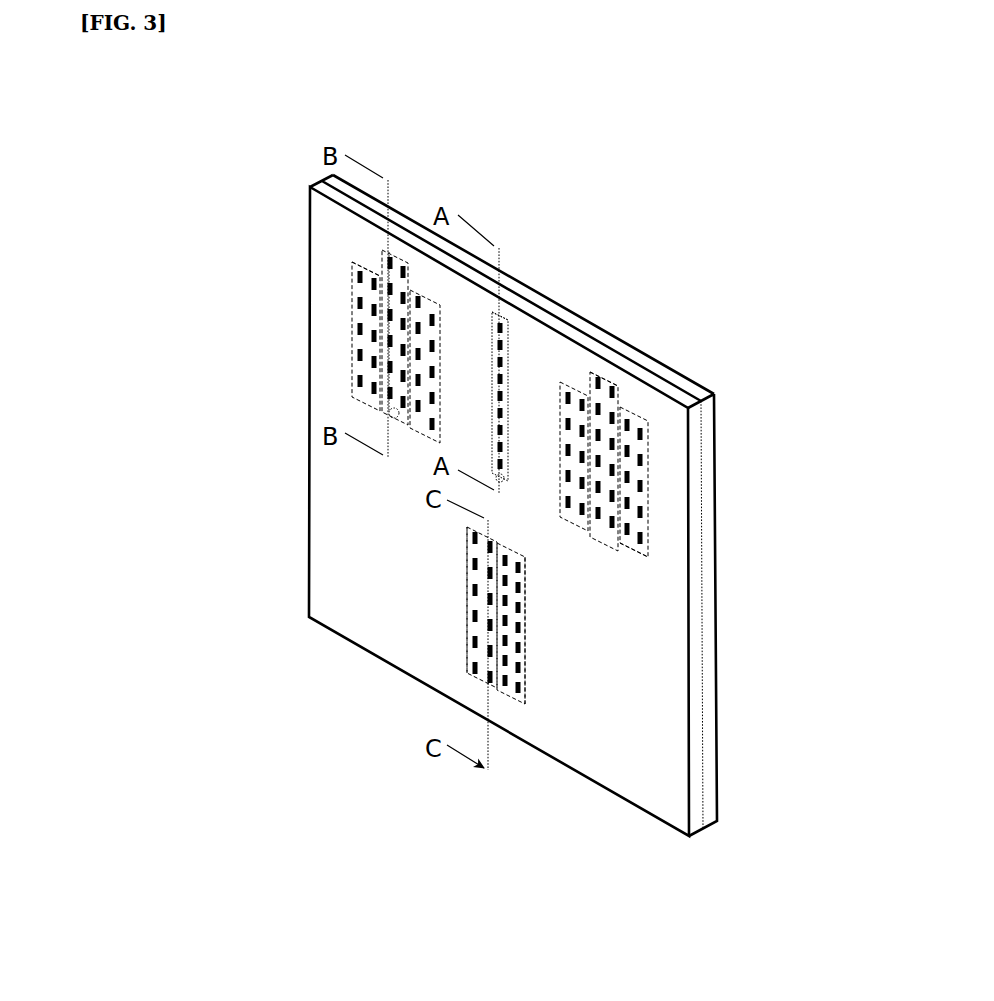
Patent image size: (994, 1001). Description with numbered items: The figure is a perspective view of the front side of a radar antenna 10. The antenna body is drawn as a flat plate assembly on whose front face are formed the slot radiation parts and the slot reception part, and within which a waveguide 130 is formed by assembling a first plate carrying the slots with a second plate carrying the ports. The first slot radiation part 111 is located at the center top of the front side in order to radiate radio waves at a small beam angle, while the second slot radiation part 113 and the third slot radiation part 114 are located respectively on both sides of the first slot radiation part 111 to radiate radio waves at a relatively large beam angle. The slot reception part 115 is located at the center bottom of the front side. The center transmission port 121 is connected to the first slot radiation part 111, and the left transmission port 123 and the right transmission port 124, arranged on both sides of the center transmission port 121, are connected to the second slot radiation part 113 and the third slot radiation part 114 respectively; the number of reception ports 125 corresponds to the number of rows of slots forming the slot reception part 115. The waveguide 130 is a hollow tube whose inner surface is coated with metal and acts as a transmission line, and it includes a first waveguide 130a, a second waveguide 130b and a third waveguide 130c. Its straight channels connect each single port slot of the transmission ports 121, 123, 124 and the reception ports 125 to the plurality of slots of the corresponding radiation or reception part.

The radar antenna 10 is at (226, 133).
The first slot radiation part 111 is at (497, 325).
The second slot radiation part 113 is at (352, 274).
The third slot radiation part 114 is at (617, 373).
The slot reception part 115 is at (468, 640).
The center transmission port 121 is at (500, 485).
The left transmission port 123 is at (398, 262).
The right transmission port 124 is at (648, 556).
The reception ports 125 is at (525, 660).
The waveguide 130 is at (648, 498).
The first waveguide 130a is at (506, 320).
The second waveguide 130b is at (352, 332).
The third waveguide 130c is at (523, 705).